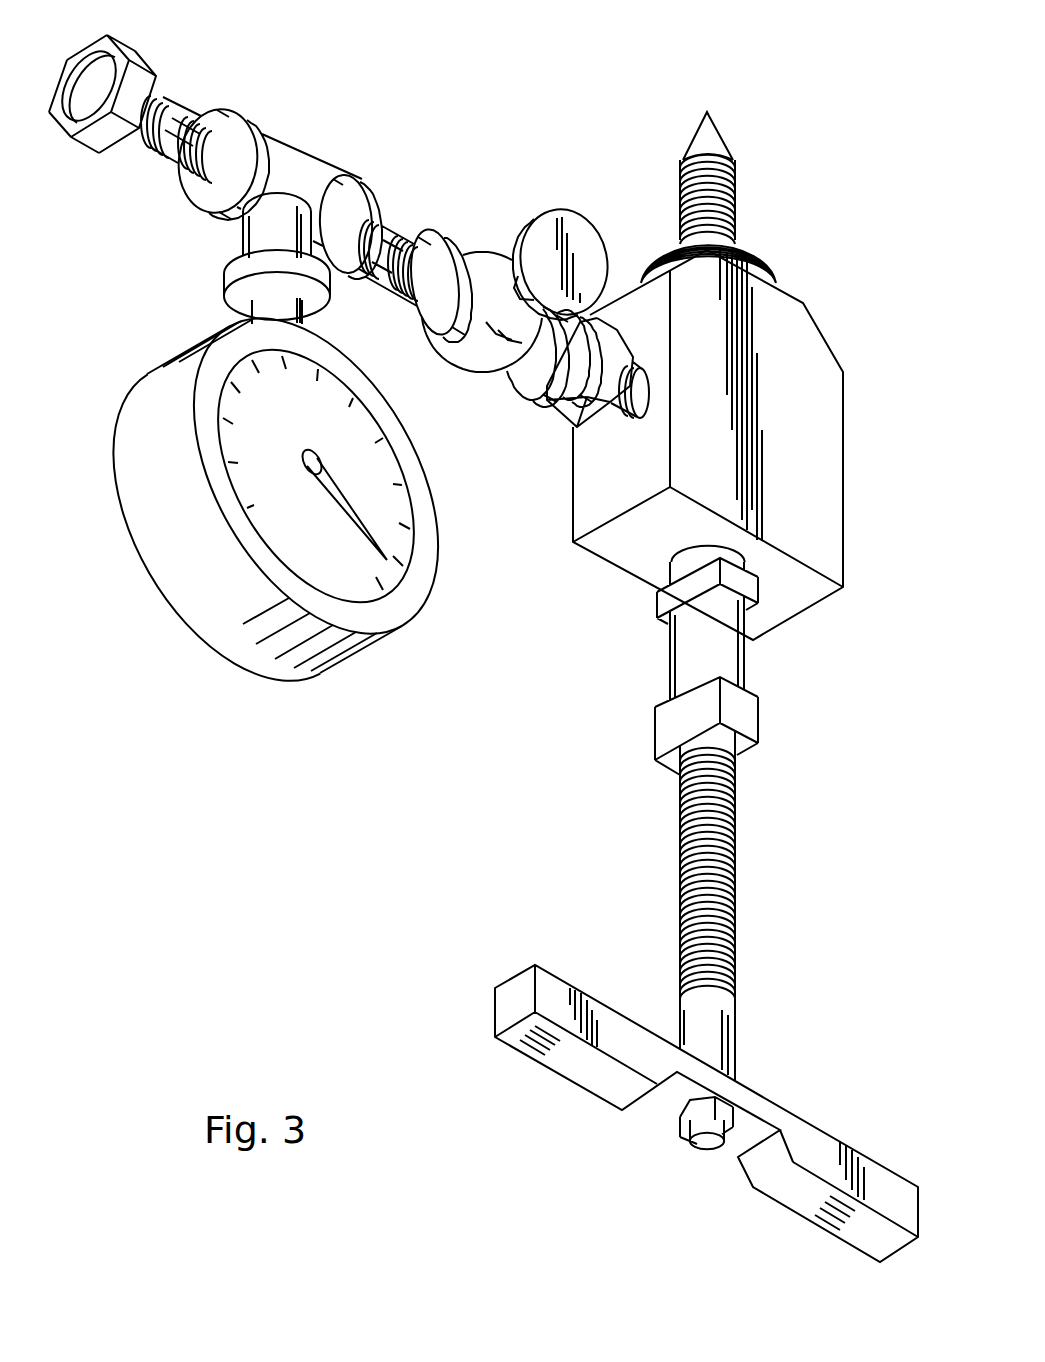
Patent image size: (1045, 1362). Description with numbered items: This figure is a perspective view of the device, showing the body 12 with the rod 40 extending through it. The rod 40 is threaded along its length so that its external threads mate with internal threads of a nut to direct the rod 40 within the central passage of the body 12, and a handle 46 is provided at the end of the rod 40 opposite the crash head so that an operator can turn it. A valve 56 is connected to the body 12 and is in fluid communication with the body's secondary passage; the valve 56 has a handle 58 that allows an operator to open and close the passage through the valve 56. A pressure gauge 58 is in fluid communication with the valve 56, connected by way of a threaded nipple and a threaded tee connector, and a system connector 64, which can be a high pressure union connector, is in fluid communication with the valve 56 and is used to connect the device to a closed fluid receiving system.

The body 12 is at (800, 338).
The rod 40 is at (737, 876).
The handle 46 is at (568, 1082).
The valve 56 is at (498, 272).
The pressure gauge 58 is at (580, 218).
The system connector 64 is at (130, 58).